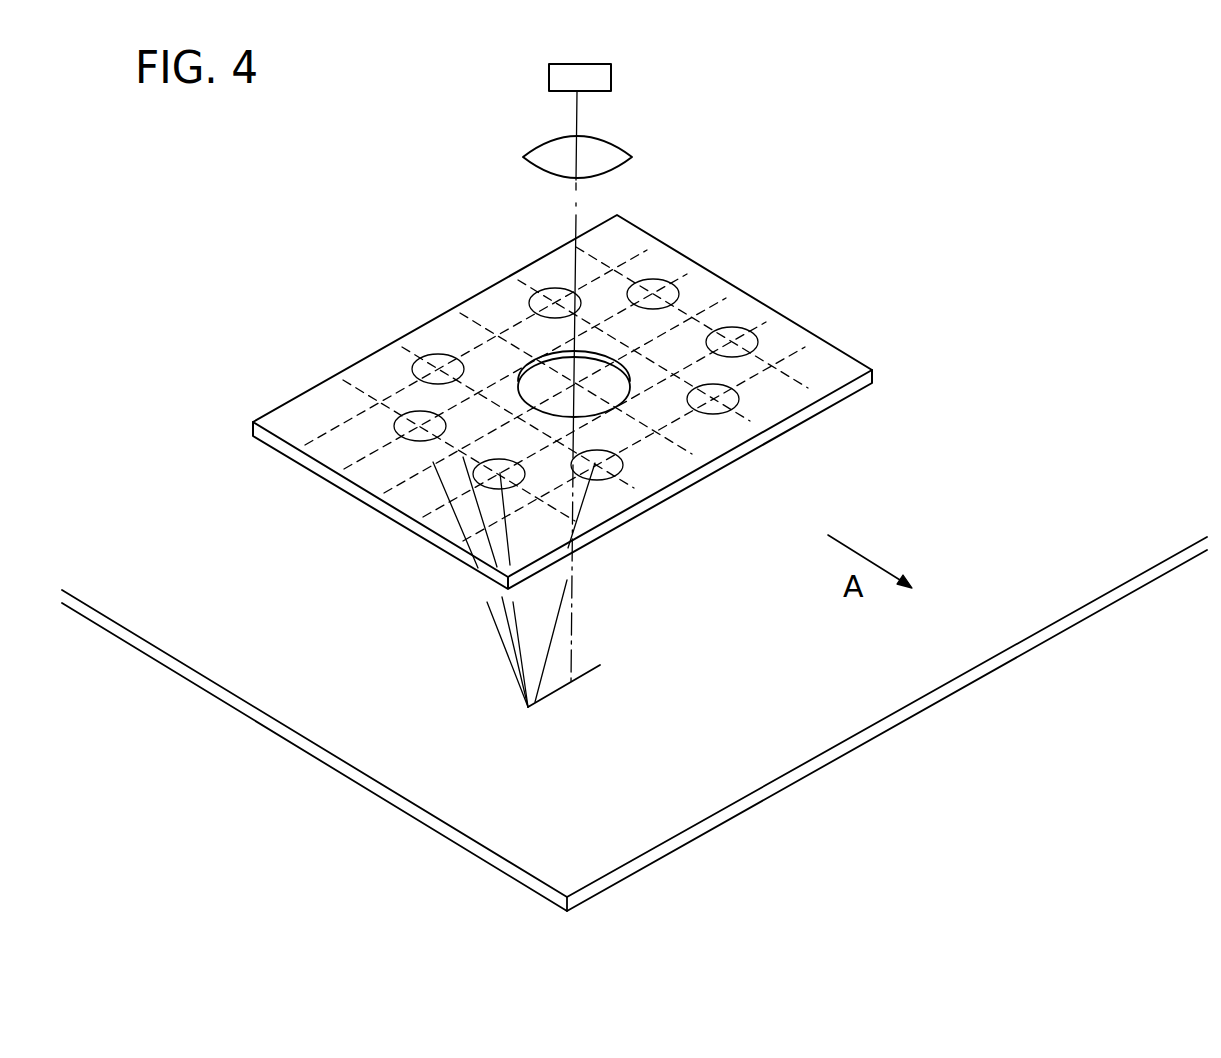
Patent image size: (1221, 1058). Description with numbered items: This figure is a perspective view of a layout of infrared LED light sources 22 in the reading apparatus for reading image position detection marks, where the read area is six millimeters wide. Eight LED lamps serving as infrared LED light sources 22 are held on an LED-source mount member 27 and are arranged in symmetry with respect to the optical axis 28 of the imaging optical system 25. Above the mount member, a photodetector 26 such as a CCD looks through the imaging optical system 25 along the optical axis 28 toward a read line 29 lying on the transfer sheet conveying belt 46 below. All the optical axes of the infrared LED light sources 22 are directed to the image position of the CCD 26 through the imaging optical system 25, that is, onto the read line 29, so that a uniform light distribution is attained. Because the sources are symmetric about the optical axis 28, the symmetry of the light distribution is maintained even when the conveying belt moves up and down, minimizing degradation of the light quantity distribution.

The photodetector 26 is at (611, 78).
The optical axis of the imaging optical system 28 is at (575, 143).
The imaging optical system 25 is at (632, 158).
The infrared LED light sources 22 is at (459, 446).
The LED-source mount member 27 is at (847, 370).
The read line 29 is at (590, 667).
The transfer sheet conveying belt 46 is at (303, 712).